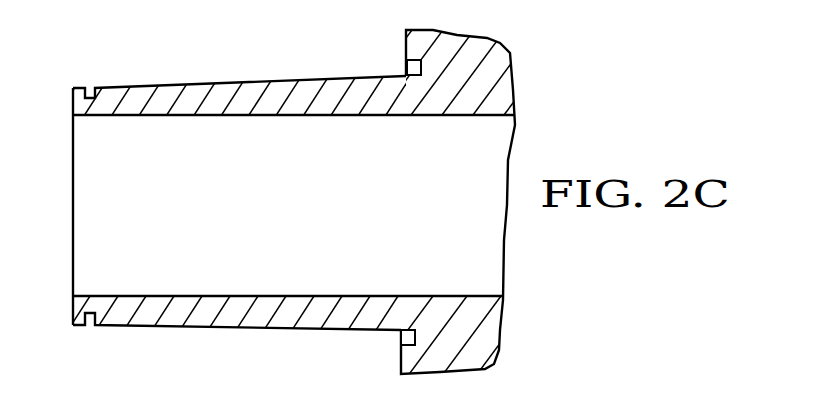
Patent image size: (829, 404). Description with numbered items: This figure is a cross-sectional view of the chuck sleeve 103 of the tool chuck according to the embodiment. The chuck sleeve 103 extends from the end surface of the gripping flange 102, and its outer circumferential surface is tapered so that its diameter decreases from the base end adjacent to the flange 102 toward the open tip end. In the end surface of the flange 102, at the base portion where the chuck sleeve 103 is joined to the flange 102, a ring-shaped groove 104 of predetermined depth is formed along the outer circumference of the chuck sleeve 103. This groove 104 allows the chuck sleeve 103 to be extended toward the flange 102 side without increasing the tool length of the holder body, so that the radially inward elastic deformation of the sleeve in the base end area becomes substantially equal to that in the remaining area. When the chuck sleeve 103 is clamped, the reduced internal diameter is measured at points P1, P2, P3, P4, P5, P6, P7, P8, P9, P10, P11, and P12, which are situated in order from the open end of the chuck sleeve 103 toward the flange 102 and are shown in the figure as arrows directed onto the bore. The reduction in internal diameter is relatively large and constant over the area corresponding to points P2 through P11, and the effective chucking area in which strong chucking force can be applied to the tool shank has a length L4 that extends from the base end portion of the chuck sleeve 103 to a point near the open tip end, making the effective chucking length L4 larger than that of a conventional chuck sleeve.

The gripping flange 102 is at (463, 312).
The chuck sleeve 103 is at (203, 71).
The ring-shaped groove 104 is at (422, 73).
The effective chucking length L4 is at (385, 76).
The measurement point P1 is at (83, 118).
The measurement point P2 is at (113, 118).
The measurement point P3 is at (143, 118).
The measurement point P4 is at (173, 293).
The measurement point P5 is at (203, 293).
The measurement point P6 is at (233, 293).
The measurement point P7 is at (263, 293).
The measurement point P8 is at (293, 118).
The measurement point P9 is at (323, 118).
The measurement point P10 is at (353, 118).
The measurement point P11 is at (383, 118).
The measurement point P12 is at (413, 118).